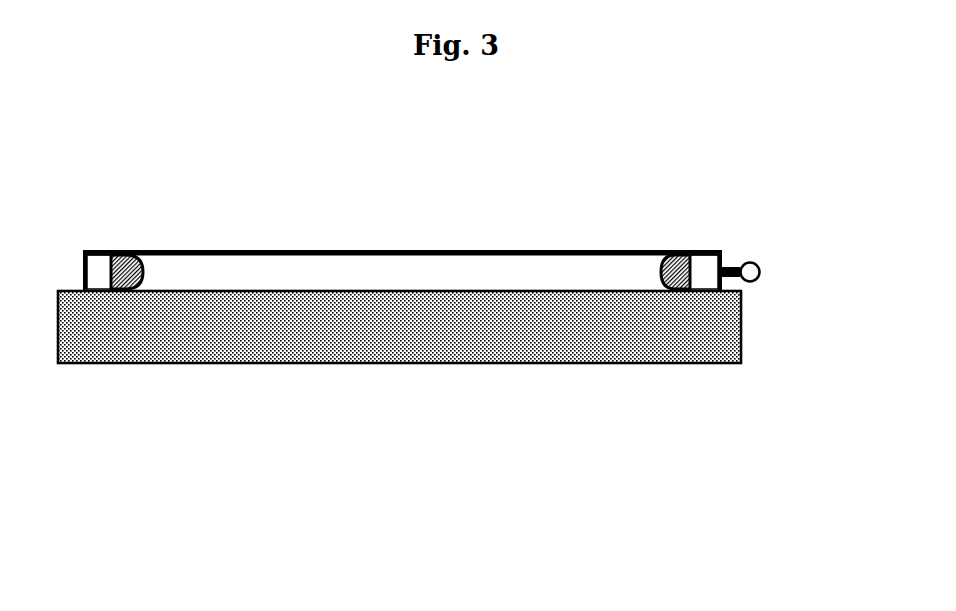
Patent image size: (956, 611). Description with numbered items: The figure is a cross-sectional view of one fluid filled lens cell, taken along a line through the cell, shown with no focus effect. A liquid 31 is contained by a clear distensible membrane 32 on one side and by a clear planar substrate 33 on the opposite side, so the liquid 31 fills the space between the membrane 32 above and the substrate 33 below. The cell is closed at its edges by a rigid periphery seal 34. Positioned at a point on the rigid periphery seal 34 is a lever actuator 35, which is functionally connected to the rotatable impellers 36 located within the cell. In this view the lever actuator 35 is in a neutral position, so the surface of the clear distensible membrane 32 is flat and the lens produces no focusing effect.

The liquid 31 is at (325, 278).
The clear distensible membrane 32 is at (443, 270).
The clear planar substrate 33 is at (706, 343).
The rigid periphery seal 34 is at (713, 263).
The lever actuator 35 is at (765, 267).
The rotatable impellers 36 is at (472, 274).